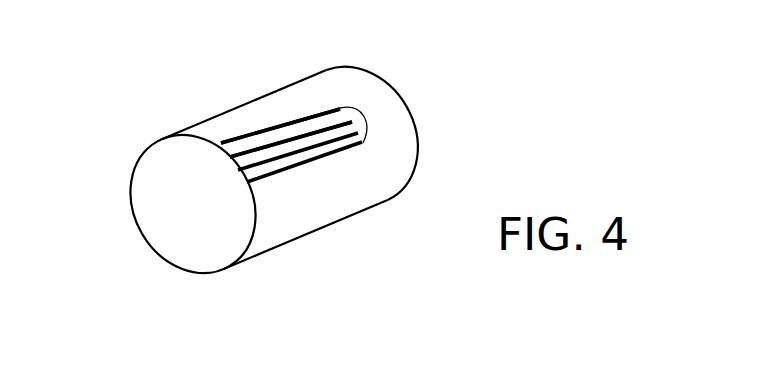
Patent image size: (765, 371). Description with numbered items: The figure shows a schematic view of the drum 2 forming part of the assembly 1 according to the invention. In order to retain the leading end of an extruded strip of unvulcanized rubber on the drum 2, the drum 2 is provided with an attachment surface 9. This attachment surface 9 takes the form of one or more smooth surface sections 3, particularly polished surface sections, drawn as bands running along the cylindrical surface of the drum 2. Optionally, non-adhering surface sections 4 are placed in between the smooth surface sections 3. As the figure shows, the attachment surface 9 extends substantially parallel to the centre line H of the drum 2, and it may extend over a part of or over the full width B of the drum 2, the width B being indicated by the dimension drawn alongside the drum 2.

The assembly 1 is at (408, 68).
The drum 2 is at (289, 225).
The smooth surface sections 3 is at (273, 137).
The non-adhering surface sections 4 is at (330, 120).
The attachment surface 9 is at (239, 191).
The width of the drum B is at (316, 60).
The centre line of the drum H is at (486, 83).